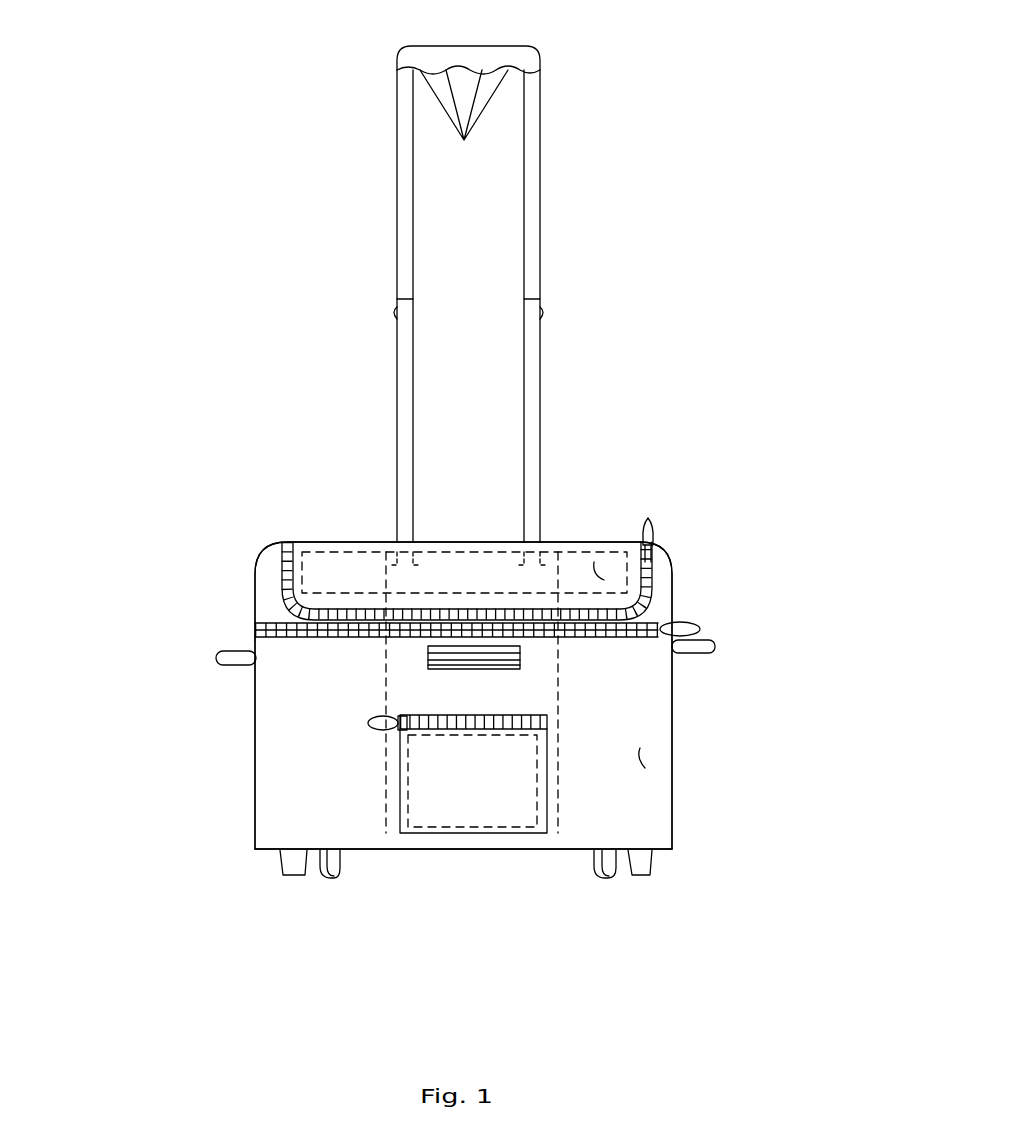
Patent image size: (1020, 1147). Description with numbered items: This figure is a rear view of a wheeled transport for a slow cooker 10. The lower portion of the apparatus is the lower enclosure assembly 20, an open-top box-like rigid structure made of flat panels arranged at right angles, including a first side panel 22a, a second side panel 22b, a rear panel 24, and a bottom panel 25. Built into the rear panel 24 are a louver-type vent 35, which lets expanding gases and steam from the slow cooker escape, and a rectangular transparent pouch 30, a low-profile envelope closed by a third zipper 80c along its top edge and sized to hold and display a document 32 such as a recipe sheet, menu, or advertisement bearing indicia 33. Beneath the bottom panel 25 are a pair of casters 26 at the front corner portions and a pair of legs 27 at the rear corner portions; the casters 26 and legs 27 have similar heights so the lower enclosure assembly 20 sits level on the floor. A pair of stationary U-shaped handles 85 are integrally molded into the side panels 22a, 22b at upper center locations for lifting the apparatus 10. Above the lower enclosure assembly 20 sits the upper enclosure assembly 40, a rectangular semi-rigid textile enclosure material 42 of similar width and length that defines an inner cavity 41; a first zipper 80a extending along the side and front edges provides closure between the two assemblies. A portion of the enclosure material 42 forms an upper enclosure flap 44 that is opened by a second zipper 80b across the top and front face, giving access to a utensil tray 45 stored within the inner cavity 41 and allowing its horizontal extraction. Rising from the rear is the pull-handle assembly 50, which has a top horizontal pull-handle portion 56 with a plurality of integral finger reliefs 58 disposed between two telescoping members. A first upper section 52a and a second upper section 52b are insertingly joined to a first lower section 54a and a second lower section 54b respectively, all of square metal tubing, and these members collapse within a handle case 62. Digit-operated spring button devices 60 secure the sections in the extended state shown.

The wheeled transport for a slow cooker 10 is at (188, 378).
The lower enclosure assembly 20 is at (683, 720).
The first side panel 22a is at (255, 760).
The second side panel 22b is at (673, 790).
The rear panel 24 is at (645, 765).
The bottom panel 25 is at (545, 855).
The casters 26 is at (330, 872).
The legs 27 is at (290, 866).
The pouch 30 is at (547, 775).
The document 32 is at (440, 835).
The indicia 33 is at (472, 803).
The vent 35 is at (428, 657).
The upper enclosure assembly 40 is at (255, 560).
The inner cavity 41 is at (600, 575).
The enclosure material 42 is at (255, 600).
The upper enclosure flap 44 is at (333, 542).
The utensil tray 45 is at (560, 545).
The pull-handle assembly 50 is at (398, 140).
The first upper section 52a is at (407, 220).
The second upper section 52b is at (532, 190).
The first lower section 54a is at (407, 430).
The second lower section 54b is at (532, 382).
The pull-handle portion 56 is at (530, 50).
The finger reliefs 58 is at (464, 119).
The spring button devices 60 is at (398, 313).
The handle case 62 is at (386, 690).
The first zipper 80a is at (652, 562).
The second zipper 80b is at (652, 562).
The third zipper 80c is at (448, 722).
The U-shaped handles 85 is at (216, 658).